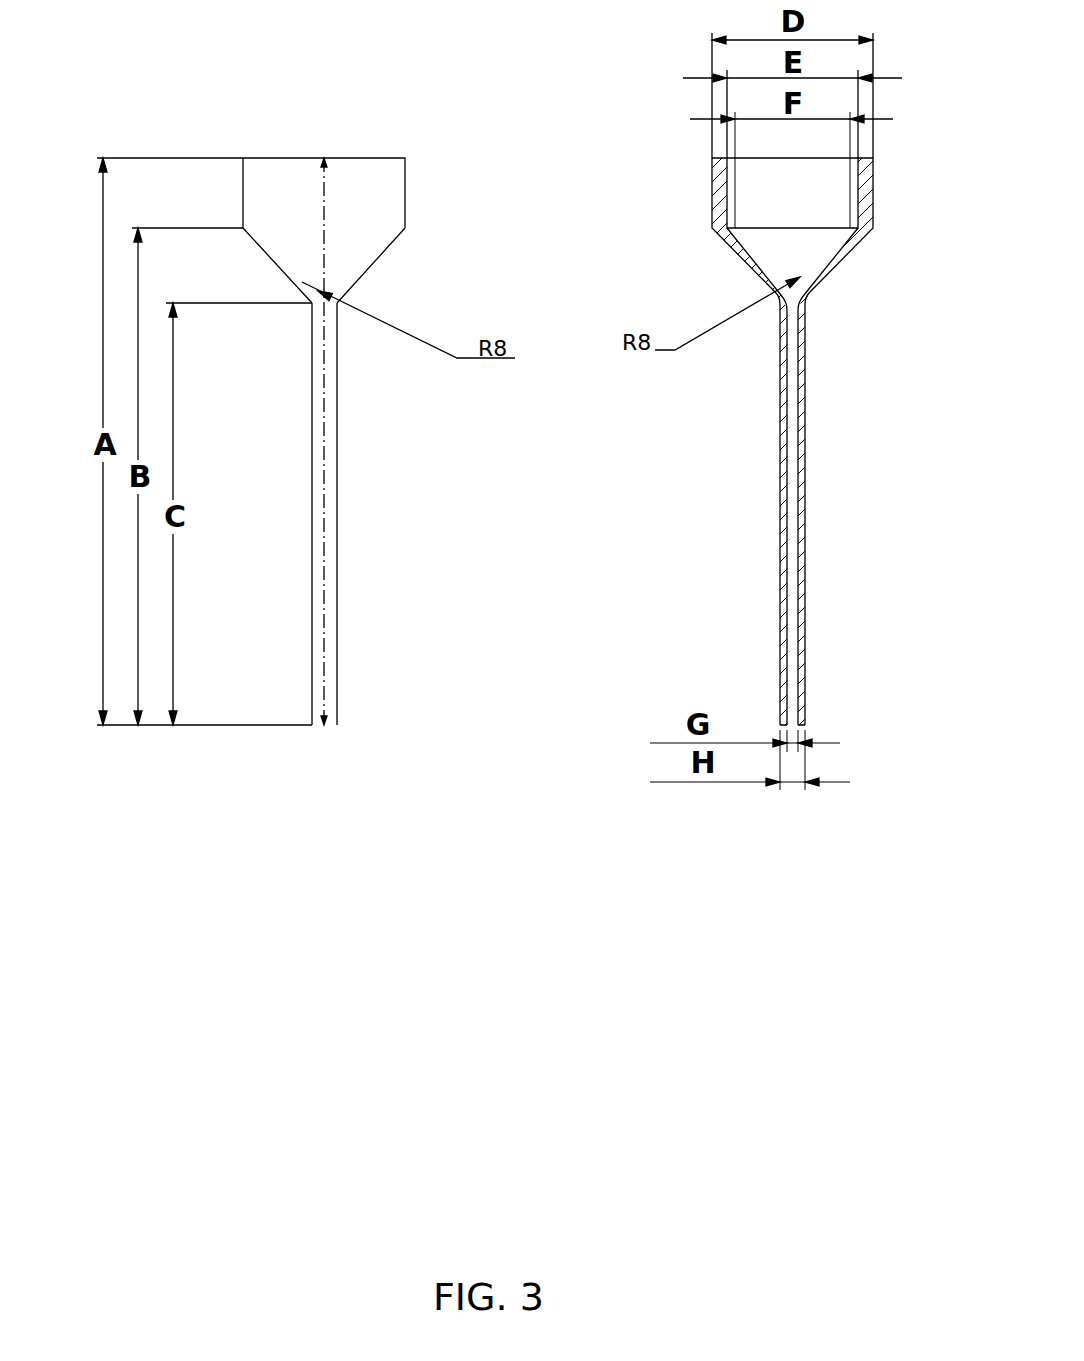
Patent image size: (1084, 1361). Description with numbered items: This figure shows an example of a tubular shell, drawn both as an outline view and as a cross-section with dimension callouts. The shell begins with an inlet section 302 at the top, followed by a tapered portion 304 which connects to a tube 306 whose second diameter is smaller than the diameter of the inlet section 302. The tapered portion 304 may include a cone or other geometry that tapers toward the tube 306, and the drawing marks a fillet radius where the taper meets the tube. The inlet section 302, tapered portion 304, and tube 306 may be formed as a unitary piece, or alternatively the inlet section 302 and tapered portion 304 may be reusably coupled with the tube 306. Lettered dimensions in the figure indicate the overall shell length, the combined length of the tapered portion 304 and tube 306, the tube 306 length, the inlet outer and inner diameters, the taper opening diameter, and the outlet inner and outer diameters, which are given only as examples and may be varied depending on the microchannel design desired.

The inlet section 302 is at (405, 170).
The tapered portion 304 is at (377, 263).
The tube 306 is at (338, 382).